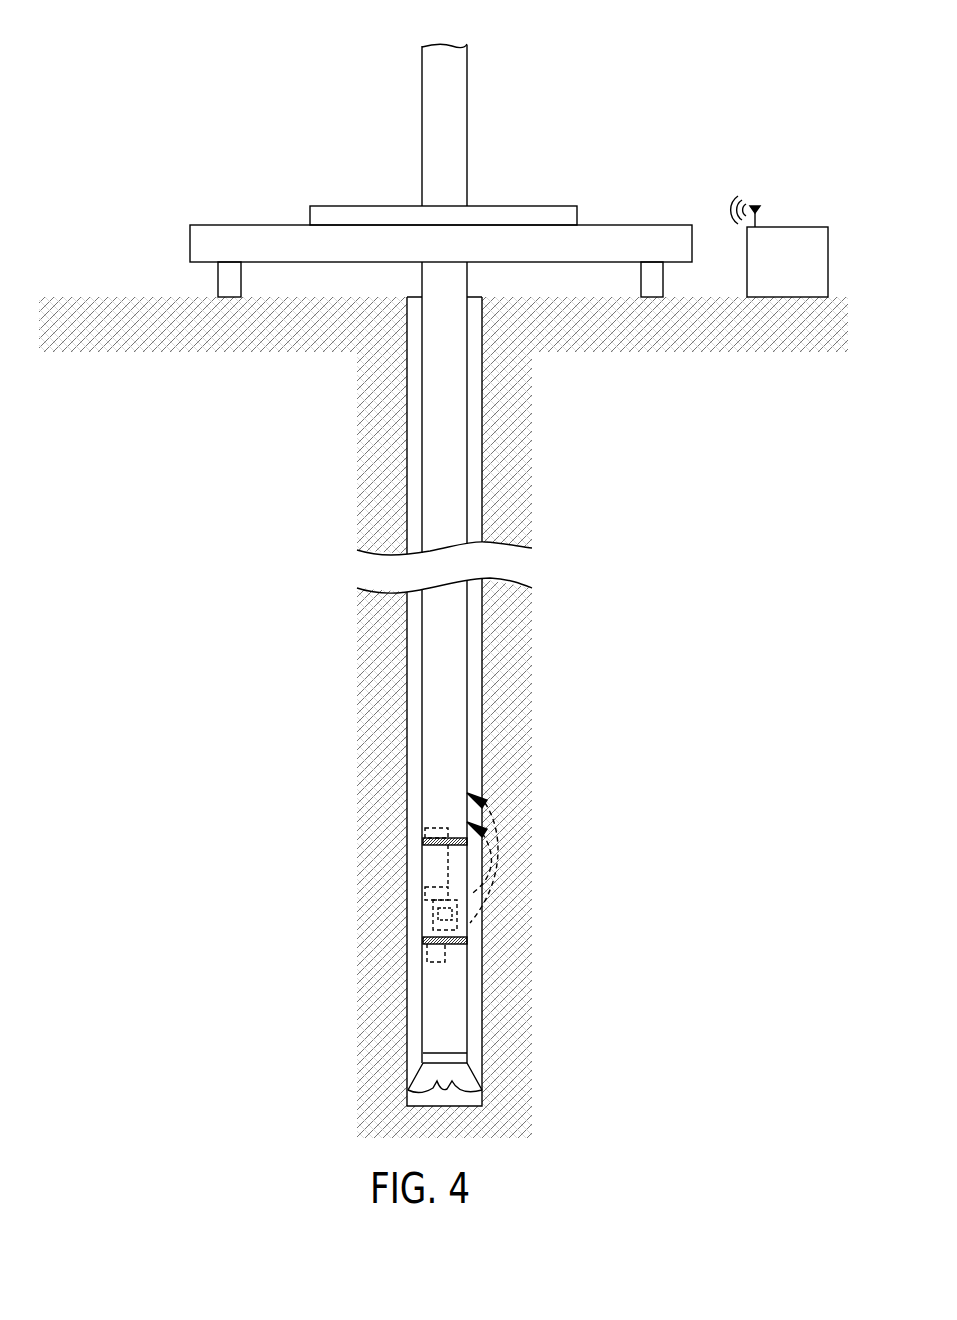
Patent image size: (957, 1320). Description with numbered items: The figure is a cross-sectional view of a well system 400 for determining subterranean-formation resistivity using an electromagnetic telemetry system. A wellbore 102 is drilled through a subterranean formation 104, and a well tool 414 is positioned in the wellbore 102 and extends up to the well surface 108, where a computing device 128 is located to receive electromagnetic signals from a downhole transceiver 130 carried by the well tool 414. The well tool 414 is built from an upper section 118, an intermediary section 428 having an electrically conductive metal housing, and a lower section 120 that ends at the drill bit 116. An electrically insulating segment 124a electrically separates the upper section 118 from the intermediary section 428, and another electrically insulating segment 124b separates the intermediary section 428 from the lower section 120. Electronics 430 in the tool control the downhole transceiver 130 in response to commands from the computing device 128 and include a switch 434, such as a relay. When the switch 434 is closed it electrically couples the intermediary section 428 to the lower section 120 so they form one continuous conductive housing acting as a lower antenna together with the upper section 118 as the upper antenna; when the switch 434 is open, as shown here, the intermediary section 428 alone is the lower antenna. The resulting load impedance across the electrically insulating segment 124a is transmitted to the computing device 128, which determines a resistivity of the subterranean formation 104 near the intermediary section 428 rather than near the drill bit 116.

The well system 400 is at (663, 72).
The well surface 108 is at (418, 297).
The computing device 128 is at (805, 262).
The wellbore 102 is at (407, 422).
The subterranean formation 104 is at (530, 402).
The well tool 414 is at (424, 505).
The upper section 118 is at (422, 812).
The electrically insulating segment 124a is at (423, 840).
The intermediary section 428 is at (423, 875).
The electronics 430 is at (433, 905).
The switch 434 is at (427, 918).
The electrically insulating segment 124b is at (423, 942).
The downhole transceiver 130 is at (248, 762).
The lower section 120 is at (423, 1022).
The drill bit 116 is at (473, 1076).